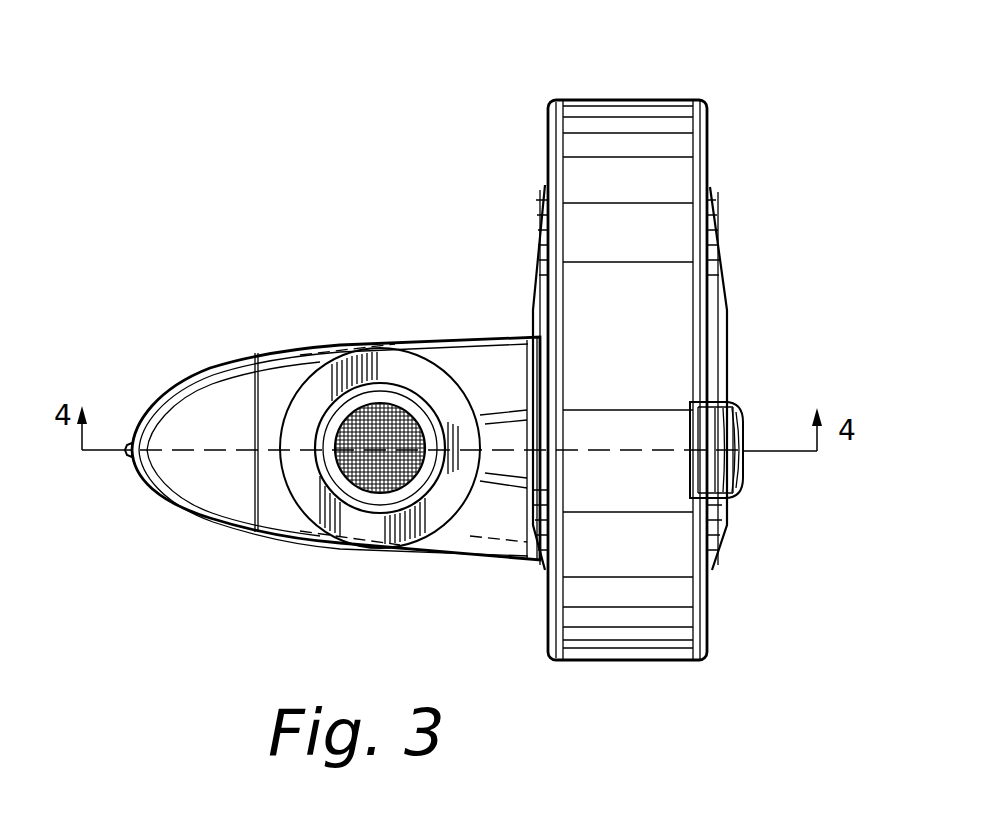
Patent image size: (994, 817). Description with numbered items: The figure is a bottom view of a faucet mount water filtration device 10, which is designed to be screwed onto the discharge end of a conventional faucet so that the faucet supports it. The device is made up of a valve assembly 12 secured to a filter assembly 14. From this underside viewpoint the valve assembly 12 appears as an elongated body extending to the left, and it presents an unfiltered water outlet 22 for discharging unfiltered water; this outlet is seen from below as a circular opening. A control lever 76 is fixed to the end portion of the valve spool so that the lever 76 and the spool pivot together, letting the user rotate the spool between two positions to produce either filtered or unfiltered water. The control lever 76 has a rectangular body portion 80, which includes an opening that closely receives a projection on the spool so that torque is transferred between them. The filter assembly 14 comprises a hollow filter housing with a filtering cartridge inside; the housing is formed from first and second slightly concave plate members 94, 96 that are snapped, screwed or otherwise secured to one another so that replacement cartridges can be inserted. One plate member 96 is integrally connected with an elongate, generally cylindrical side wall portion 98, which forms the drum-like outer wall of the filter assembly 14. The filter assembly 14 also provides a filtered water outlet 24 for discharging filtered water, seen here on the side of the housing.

The faucet mount water filtration device 10 is at (326, 182).
The valve assembly 12 is at (258, 340).
The filter assembly 14 is at (627, 90).
The unfiltered water outlet 22 is at (374, 425).
The filtered water outlet 24 is at (731, 428).
The control lever 76 is at (131, 455).
The rectangular body portion 80 is at (201, 487).
The first plate member 94 is at (535, 264).
The second plate member 96 is at (723, 548).
The side wall portion 98 is at (648, 314).